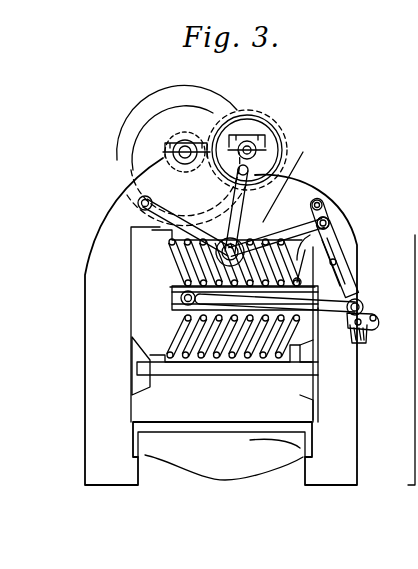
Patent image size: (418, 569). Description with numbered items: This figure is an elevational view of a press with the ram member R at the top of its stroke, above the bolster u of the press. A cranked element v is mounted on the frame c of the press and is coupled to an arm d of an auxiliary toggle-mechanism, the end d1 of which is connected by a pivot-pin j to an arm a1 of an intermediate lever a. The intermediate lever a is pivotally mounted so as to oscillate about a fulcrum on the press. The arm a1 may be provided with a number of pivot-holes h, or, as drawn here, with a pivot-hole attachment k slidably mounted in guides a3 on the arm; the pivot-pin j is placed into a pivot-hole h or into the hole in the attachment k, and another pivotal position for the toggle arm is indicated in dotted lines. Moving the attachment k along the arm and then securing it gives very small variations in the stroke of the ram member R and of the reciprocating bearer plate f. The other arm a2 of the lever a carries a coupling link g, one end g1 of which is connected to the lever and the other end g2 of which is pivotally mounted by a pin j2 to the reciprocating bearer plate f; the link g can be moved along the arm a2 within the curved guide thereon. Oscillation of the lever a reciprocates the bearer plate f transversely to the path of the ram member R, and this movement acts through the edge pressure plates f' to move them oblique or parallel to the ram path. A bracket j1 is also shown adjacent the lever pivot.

The frame c is at (104, 214).
The cranked element v is at (232, 165).
The arm of auxiliary toggle-mechanism d is at (275, 218).
The end of arm d1 is at (318, 199).
The pivot-holes h is at (328, 198).
The pivot-pin j is at (331, 208).
The intermediate lever a is at (340, 252).
The arm of intermediate lever a1 is at (333, 235).
The arm of intermediate lever a2 is at (362, 328).
The guides a3 is at (369, 248).
The coupling link g is at (348, 292).
The end of coupling link g1 is at (362, 303).
The end of coupling link g2 is at (173, 300).
The bracket j1 is at (372, 318).
The pin j2 is at (173, 295).
The pivot-hole attachment k is at (358, 345).
The reciprocating bearer plate f is at (188, 261).
The edge pressure plates f' is at (185, 344).
The ram member R is at (168, 358).
The bolster u is at (285, 437).